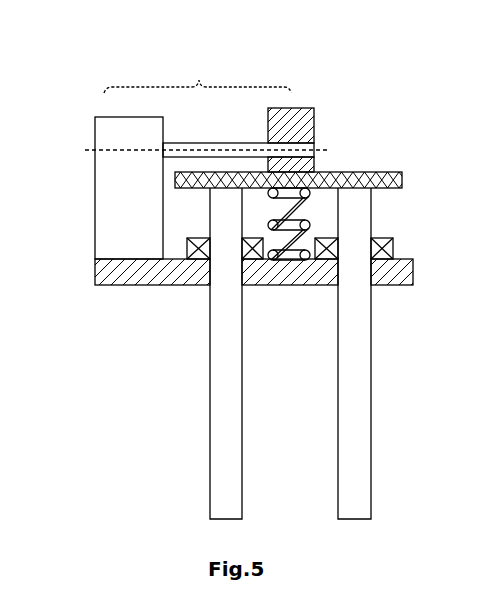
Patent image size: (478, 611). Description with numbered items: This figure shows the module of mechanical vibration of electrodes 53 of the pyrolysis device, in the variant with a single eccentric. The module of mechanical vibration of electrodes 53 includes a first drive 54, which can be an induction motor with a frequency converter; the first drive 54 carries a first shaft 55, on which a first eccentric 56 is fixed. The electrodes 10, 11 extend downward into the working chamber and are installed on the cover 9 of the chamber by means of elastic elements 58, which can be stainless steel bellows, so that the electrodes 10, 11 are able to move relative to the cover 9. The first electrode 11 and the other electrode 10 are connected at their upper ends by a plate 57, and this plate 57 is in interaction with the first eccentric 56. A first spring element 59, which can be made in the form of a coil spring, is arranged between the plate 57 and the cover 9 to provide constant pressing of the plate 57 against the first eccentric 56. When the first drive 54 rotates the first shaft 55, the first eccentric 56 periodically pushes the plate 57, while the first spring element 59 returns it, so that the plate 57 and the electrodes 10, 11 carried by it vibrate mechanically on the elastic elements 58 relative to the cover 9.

The module of mechanical vibration of electrodes 53 is at (199, 80).
The first drive 54 is at (125, 160).
The first shaft 55 is at (206, 150).
The first eccentric 56 is at (290, 125).
The plate 57 is at (315, 180).
The elastic elements 58 is at (200, 248).
The first spring element 59 is at (310, 220).
The cover 9 is at (137, 273).
The first electrode 11 is at (225, 319).
The electrode 10 is at (357, 371).